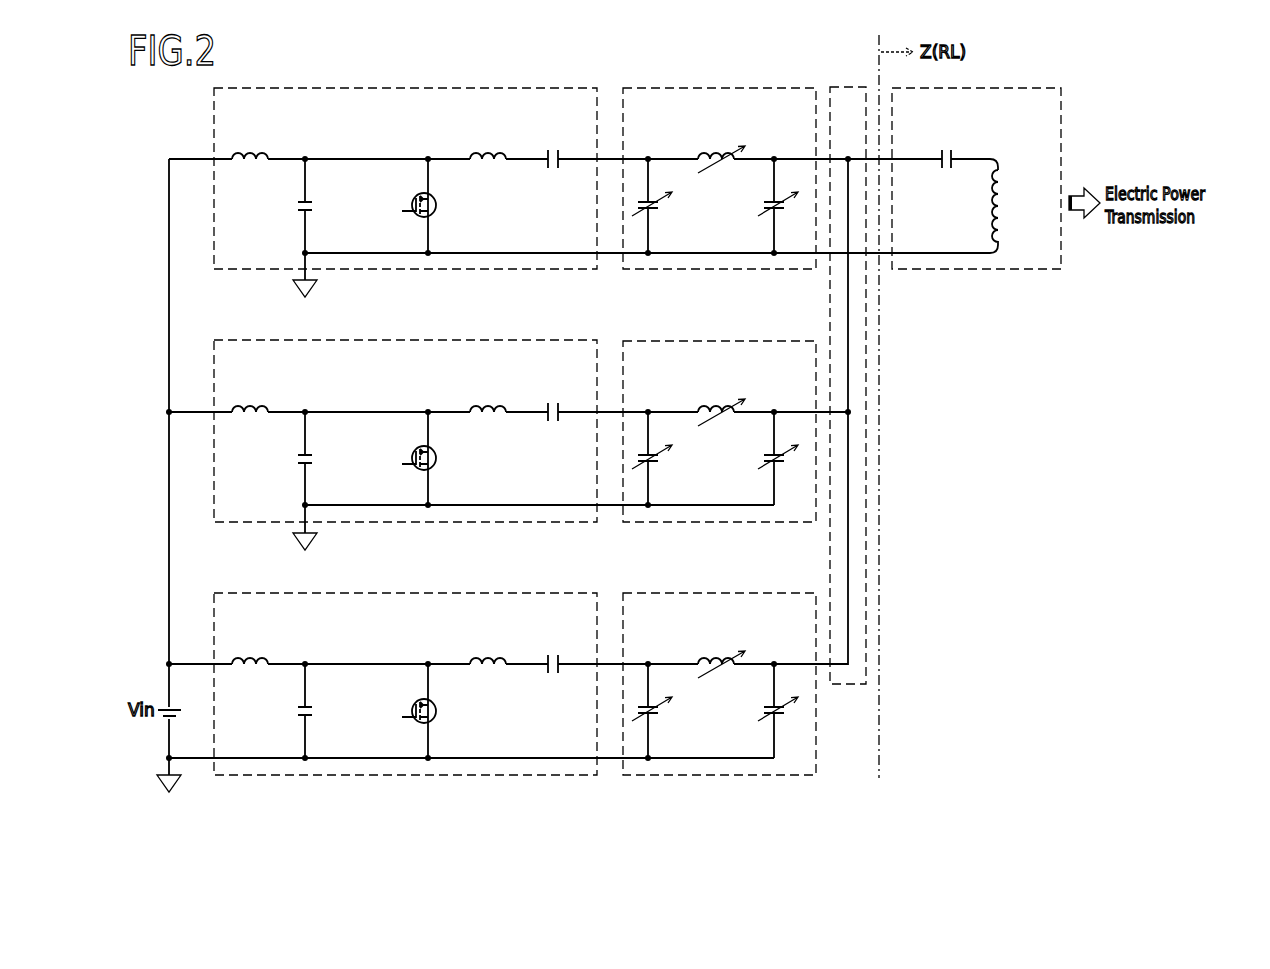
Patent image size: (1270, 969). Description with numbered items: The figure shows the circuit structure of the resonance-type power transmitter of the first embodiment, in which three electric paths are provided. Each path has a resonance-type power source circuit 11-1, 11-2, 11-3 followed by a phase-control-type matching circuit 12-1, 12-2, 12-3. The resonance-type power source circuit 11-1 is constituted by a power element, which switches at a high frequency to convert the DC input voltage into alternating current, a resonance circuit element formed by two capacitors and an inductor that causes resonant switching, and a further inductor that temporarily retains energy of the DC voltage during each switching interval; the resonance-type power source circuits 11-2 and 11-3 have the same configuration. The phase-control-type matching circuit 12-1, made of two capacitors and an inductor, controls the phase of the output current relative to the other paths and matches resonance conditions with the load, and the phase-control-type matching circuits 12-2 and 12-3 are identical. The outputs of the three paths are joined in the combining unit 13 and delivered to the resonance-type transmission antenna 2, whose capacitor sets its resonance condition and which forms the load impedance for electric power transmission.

The resonance-type power source circuit 11-1 is at (256, 88).
The resonance-type power source circuit 11-2 is at (256, 340).
The resonance-type power source circuit 11-3 is at (256, 593).
The phase-control-type matching circuit 12-1 is at (650, 88).
The phase-control-type matching circuit 12-2 is at (650, 341).
The phase-control-type matching circuit 12-3 is at (650, 593).
The combining unit 13 is at (841, 88).
The resonance-type transmission antenna 2 is at (993, 88).